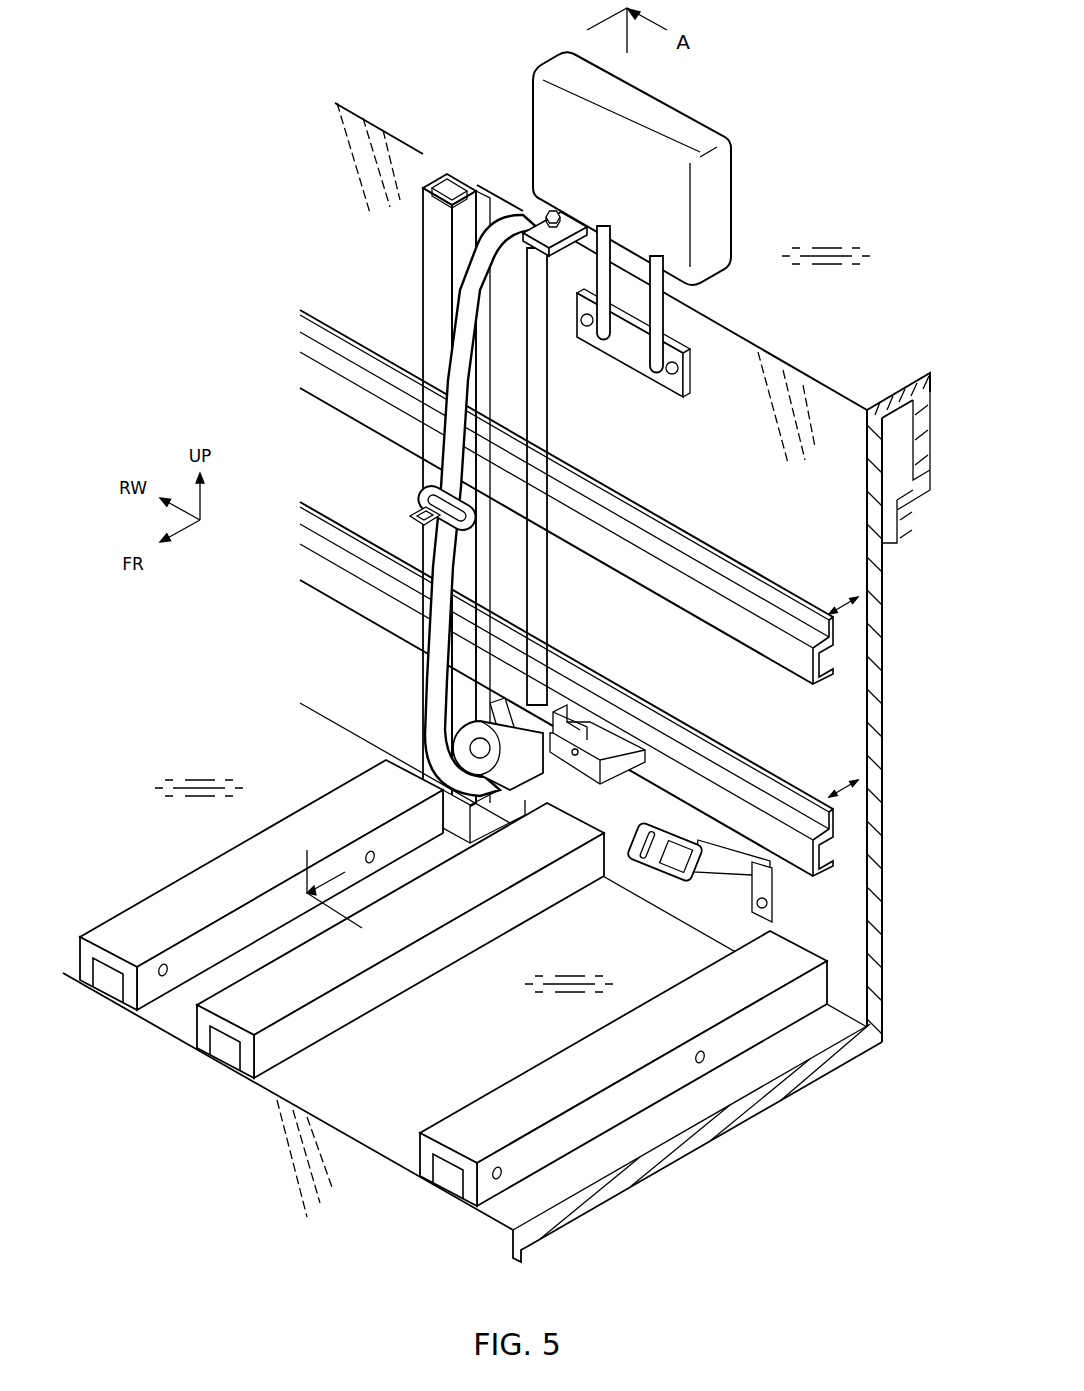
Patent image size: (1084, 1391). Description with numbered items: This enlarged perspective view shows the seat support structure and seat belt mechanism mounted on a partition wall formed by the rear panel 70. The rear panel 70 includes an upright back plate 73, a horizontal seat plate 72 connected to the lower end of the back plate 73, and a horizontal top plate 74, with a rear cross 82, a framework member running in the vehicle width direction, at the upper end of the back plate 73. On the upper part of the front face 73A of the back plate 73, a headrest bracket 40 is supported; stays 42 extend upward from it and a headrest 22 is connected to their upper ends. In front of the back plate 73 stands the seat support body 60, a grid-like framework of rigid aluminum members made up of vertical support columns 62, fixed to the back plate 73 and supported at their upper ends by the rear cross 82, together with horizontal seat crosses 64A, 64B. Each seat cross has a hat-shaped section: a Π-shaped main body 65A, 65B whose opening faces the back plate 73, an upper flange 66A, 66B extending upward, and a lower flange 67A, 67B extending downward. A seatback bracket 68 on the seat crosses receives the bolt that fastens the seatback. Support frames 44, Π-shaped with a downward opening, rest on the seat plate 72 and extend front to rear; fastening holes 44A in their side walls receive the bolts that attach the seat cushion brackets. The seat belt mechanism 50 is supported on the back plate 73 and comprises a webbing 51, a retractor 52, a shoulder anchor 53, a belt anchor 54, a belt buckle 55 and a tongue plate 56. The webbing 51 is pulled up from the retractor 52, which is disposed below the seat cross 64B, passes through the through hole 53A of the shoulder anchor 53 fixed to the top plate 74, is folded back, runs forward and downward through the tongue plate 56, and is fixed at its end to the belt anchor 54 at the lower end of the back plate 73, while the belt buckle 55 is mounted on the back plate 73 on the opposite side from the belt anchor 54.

The headrest 22 is at (710, 197).
The headrest bracket 40 is at (690, 368).
The stay 42 is at (606, 266).
The support frame 44 is at (435, 983).
The fastening hole 44A is at (700, 1050).
The seat belt mechanism 50 is at (553, 552).
The webbing 51 is at (549, 410).
The retractor 52 is at (530, 766).
The shoulder anchor 53 is at (553, 205).
The through hole 53A is at (552, 210).
The belt anchor 54 is at (490, 826).
The belt buckle 55 is at (686, 884).
The tongue plate 56 is at (412, 516).
The seat support body 60 is at (579, 524).
The support column 62 is at (440, 184).
The seat cross 64A is at (566, 519).
The seat cross 64B is at (570, 716).
The main body 65A is at (742, 585).
The main body 65B is at (590, 695).
The upper flange 66A is at (706, 548).
The upper flange 66B is at (569, 652).
The lower flange 67A is at (828, 693).
The lower flange 67B is at (830, 880).
The seatback bracket 68 is at (640, 745).
The rear panel 70 is at (626, 572).
The seat plate 72 is at (757, 1105).
The back plate 73 is at (877, 845).
The front face 73A is at (833, 410).
The top plate 74 is at (893, 395).
The rear cross 82 is at (927, 493).